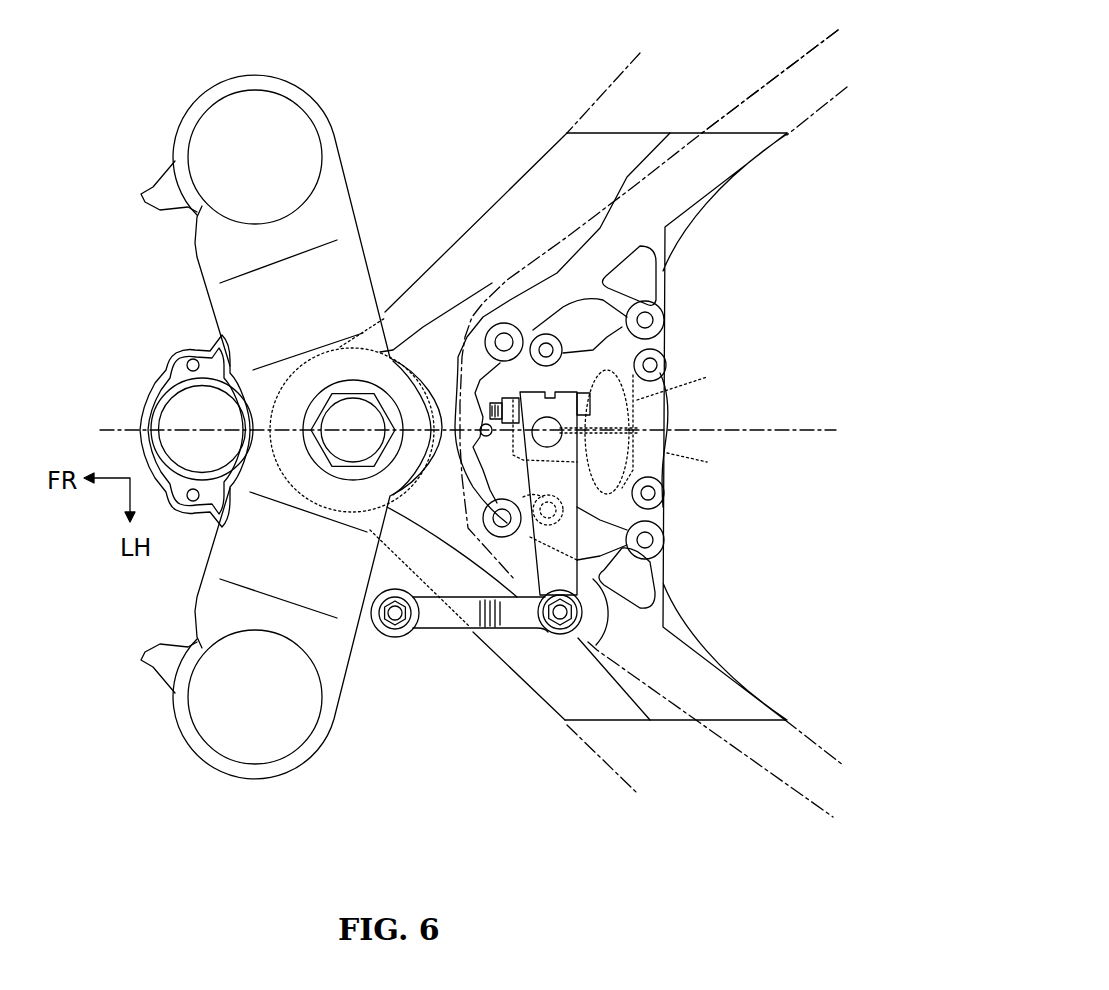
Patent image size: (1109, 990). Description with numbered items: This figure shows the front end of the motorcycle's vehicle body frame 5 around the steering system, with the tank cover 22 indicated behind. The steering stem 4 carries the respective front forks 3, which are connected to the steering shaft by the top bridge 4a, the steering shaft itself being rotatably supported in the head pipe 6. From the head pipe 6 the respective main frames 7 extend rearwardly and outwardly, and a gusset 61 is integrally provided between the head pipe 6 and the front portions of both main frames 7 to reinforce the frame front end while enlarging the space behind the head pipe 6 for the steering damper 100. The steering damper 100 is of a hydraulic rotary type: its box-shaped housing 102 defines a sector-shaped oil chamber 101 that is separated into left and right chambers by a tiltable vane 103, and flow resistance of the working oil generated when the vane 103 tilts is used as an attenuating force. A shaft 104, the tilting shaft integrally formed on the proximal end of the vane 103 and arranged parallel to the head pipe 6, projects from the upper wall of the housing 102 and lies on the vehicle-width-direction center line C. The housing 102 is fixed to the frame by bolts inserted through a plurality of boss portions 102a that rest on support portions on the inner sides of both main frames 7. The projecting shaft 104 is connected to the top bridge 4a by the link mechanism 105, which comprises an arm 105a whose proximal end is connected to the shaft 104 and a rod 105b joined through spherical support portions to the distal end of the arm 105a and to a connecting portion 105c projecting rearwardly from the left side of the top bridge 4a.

The front fork 3 is at (303, 107).
The steering stem 4 is at (296, 427).
The top bridge 4a is at (357, 210).
The vehicle body frame 5 is at (524, 174).
The head pipe 6 is at (288, 348).
The main frame 7 is at (556, 143).
The tank cover 22 is at (768, 80).
The gusset 61 is at (682, 253).
The steering damper 100 is at (664, 472).
The oil chamber 101 is at (665, 452).
The housing 102 is at (668, 423).
The boss portion 102a is at (502, 323).
The vane 103 is at (640, 400).
The shaft 104 is at (517, 398).
The link mechanism 105 is at (485, 670).
The arm 105a is at (596, 645).
The rod 105b is at (513, 640).
The connecting portion 105c is at (368, 638).
The vehicle-width-direction center line C is at (834, 429).